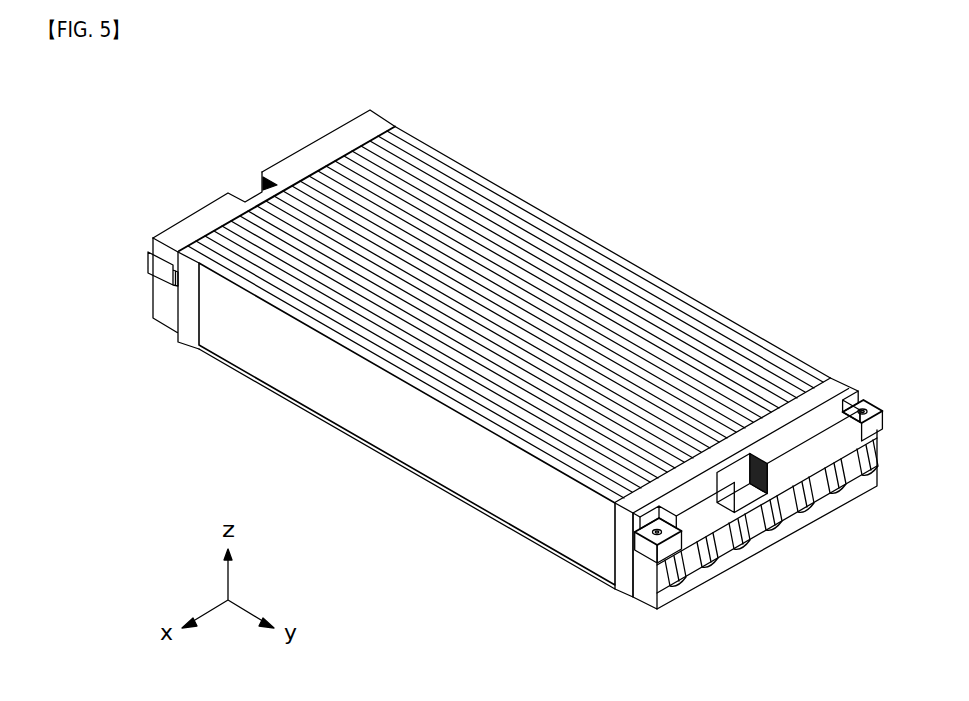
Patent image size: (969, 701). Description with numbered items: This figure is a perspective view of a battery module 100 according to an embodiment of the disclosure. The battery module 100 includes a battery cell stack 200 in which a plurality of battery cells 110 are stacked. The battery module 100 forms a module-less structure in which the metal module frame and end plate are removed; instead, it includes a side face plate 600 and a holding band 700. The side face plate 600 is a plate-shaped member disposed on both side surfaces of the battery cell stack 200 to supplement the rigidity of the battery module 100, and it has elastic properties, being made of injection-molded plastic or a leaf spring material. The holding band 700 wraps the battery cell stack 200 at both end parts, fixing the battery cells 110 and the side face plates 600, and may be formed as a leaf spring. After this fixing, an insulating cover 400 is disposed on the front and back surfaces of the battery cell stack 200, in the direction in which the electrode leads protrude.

The battery module 100 is at (530, 76).
The battery cell stack 200 is at (577, 224).
The battery cell 110 is at (633, 297).
The insulating cover 400 is at (310, 155).
The side face plate 600 is at (446, 463).
The holding band 700 is at (190, 315).